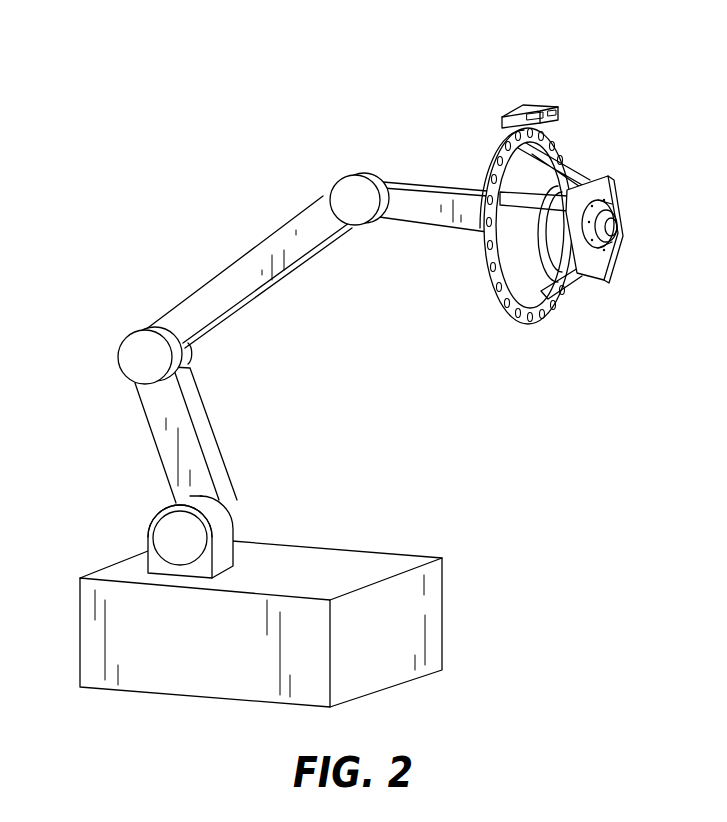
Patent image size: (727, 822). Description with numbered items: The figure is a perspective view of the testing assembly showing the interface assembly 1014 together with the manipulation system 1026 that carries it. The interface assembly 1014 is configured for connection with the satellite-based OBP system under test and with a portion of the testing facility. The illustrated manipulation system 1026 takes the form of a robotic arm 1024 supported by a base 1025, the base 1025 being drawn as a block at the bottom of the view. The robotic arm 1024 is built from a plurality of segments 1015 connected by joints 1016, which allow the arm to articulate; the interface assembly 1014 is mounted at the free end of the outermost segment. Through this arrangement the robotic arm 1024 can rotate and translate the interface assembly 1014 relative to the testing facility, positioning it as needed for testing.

The interface assembly 1014 is at (588, 70).
The segments 1015 is at (247, 287).
The joints 1016 is at (350, 190).
The robotic arm 1024 is at (260, 243).
The base 1025 is at (422, 597).
The manipulation system 1026 is at (168, 243).